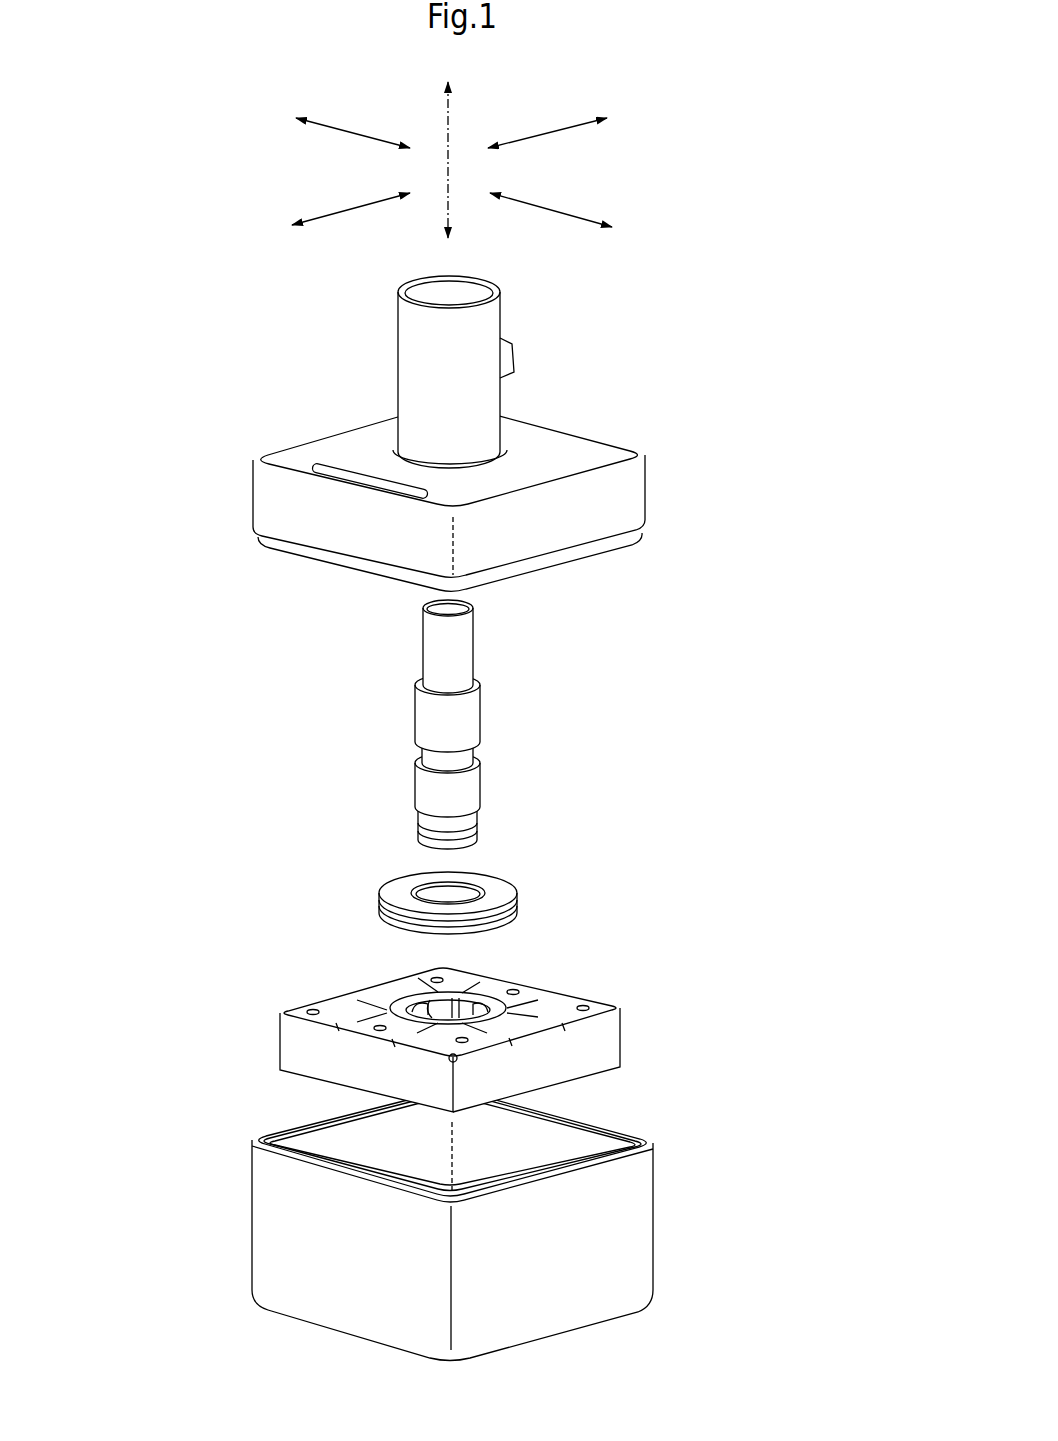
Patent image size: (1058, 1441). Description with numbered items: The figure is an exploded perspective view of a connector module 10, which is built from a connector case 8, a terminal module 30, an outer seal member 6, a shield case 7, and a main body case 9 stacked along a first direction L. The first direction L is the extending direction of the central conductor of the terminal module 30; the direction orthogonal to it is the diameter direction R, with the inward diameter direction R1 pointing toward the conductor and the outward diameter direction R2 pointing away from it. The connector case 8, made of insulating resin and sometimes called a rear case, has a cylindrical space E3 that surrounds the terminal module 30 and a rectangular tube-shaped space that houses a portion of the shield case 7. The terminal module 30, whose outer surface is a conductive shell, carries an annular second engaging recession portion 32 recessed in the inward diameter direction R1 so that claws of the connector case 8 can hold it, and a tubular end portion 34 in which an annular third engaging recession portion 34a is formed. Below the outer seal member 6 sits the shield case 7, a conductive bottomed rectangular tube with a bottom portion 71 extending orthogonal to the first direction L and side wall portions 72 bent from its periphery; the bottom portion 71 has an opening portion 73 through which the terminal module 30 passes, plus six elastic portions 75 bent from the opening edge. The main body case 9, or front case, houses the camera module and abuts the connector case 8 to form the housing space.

The first direction L is at (450, 118).
The diameter direction R is at (452, 164).
The inward diameter direction R1 is at (447, 177).
The outward diameter direction R2 is at (453, 174).
The connector module 10 is at (494, 428).
The connector case 8 is at (627, 492).
The cylindrical space E3 is at (440, 295).
The terminal module 30 is at (476, 724).
The second engaging recession portion 32 is at (437, 755).
The tubular end portion 34 is at (544, 818).
The third engaging recession portion 34a is at (467, 818).
The outer seal member 6 is at (517, 903).
The shield case 7 is at (467, 999).
The bottom portion 71 is at (558, 1007).
The side wall portions 72 is at (293, 1043).
The opening portion 73 is at (457, 1000).
The elastic portions 75 is at (437, 1007).
The main body case 9 is at (637, 1237).